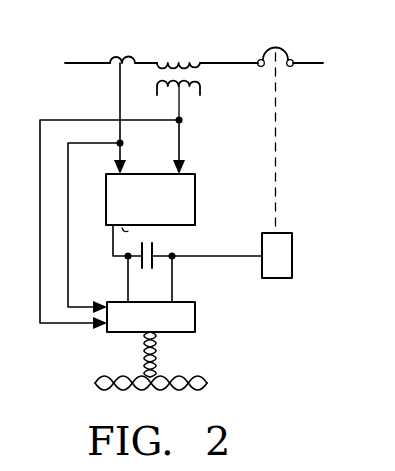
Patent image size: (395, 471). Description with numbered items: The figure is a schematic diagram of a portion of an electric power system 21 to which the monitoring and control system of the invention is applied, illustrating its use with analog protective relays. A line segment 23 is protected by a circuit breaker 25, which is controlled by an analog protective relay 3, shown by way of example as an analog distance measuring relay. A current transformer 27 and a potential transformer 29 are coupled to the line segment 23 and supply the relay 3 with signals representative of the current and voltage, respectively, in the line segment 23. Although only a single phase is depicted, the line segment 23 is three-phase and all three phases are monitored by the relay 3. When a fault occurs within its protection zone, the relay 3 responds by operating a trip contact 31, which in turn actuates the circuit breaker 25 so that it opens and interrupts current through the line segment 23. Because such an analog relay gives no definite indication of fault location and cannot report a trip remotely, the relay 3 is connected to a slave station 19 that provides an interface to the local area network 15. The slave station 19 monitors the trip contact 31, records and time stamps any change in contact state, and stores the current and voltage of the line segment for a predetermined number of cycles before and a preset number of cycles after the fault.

The analog protective relay 3 is at (196, 193).
The local area network 15 is at (112, 377).
The slave station 19 is at (196, 312).
The electric power system 21 is at (184, 47).
The line segment 23 is at (232, 63).
The circuit breaker 25 is at (292, 262).
The current transformer 27 is at (112, 60).
The potential transformer 29 is at (200, 73).
The trip contact 31 is at (157, 247).